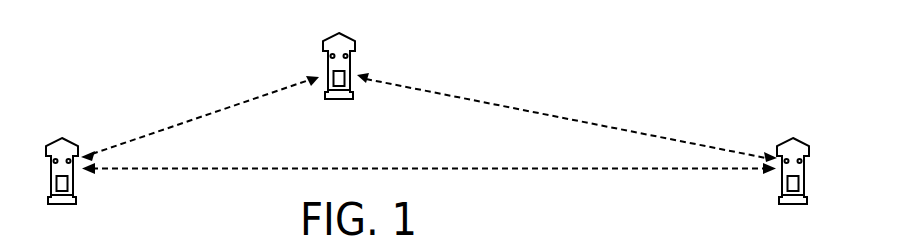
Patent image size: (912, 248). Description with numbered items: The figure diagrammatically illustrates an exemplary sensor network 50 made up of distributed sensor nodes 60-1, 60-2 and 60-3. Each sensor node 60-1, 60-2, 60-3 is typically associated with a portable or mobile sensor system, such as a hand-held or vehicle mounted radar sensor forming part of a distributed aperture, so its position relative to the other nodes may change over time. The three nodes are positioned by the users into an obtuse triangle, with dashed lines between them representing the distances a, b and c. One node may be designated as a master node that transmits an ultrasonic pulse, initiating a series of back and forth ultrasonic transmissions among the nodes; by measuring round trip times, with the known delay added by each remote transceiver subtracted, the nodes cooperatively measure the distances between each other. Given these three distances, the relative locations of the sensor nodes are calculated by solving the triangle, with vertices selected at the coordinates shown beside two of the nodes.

The sensor network 50 is at (575, 37).
The sensor node 60-1 is at (354, 62).
The sensor node 60-2 is at (46, 170).
The sensor node 60-3 is at (801, 138).